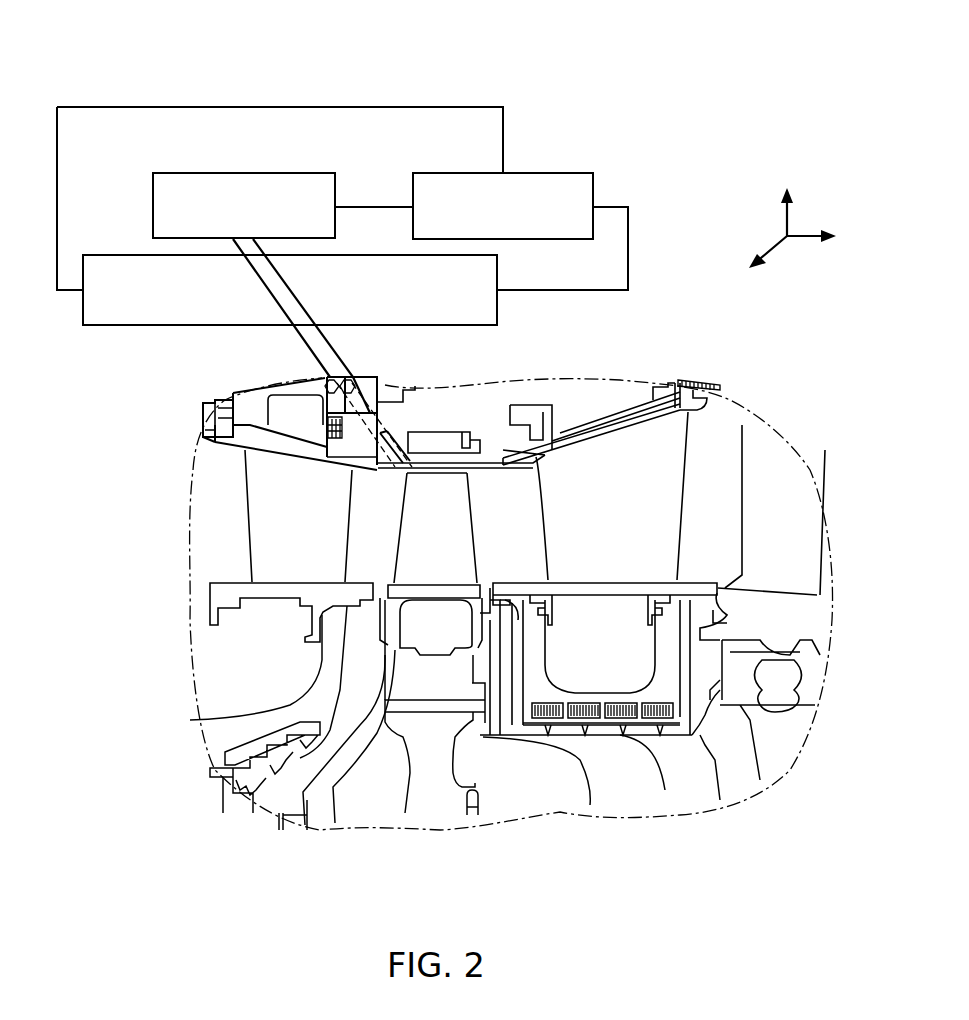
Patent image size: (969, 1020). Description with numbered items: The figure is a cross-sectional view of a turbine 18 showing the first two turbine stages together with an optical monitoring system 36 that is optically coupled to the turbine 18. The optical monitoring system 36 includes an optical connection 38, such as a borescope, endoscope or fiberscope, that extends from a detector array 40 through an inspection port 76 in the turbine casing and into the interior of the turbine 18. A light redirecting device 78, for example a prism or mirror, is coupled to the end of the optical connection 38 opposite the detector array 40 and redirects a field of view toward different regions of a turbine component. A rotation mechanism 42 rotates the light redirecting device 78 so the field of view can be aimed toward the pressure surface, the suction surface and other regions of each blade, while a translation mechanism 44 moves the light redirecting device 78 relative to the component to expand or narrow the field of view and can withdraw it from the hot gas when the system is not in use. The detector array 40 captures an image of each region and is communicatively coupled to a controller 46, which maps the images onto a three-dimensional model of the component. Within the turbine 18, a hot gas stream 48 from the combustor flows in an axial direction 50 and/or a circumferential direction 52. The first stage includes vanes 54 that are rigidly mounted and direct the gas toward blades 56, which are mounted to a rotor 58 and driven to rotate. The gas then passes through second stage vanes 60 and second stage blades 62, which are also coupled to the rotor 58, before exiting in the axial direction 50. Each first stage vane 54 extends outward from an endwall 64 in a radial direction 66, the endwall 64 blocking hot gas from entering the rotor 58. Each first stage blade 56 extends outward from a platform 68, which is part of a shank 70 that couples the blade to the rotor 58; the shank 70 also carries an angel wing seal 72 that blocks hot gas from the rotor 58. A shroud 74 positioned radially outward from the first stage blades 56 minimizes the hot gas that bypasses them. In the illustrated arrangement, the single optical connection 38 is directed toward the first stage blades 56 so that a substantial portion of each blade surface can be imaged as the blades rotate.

The turbine 18 is at (606, 398).
The optical monitoring system 36 is at (562, 58).
The optical connection 38 is at (328, 376).
The detector array 40 is at (270, 173).
The rotation mechanism 42 is at (112, 326).
The translation mechanism 44 is at (498, 307).
The controller 46 is at (548, 173).
The hot gas stream 48 is at (225, 522).
The axial direction 50 is at (808, 238).
The circumferential direction 52 is at (768, 244).
The first stage vanes 54 is at (313, 519).
The first stage blades 56 is at (440, 519).
The rotor 58 is at (446, 687).
The second stage vanes 60 is at (625, 519).
The second stage blades 62 is at (810, 549).
The endwall 64 is at (362, 582).
The radial direction 66 is at (792, 213).
The platform 68 is at (450, 584).
The shank 70 is at (385, 620).
The seal (angel wing) 72 is at (488, 612).
The shroud 74 is at (428, 460).
The inspection port 76 is at (388, 380).
The light redirecting device 78 is at (398, 466).